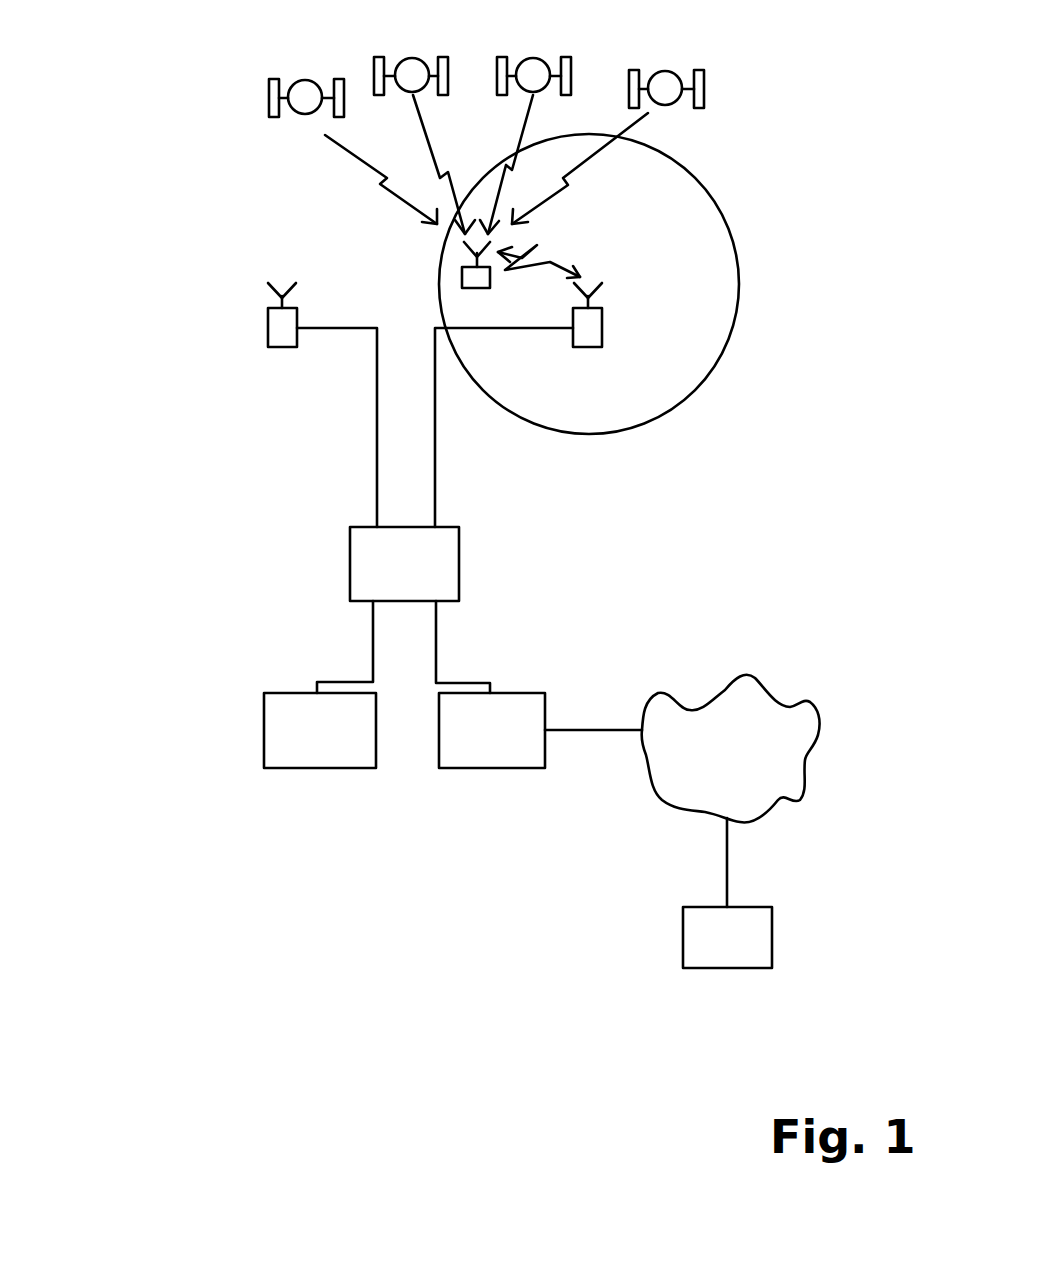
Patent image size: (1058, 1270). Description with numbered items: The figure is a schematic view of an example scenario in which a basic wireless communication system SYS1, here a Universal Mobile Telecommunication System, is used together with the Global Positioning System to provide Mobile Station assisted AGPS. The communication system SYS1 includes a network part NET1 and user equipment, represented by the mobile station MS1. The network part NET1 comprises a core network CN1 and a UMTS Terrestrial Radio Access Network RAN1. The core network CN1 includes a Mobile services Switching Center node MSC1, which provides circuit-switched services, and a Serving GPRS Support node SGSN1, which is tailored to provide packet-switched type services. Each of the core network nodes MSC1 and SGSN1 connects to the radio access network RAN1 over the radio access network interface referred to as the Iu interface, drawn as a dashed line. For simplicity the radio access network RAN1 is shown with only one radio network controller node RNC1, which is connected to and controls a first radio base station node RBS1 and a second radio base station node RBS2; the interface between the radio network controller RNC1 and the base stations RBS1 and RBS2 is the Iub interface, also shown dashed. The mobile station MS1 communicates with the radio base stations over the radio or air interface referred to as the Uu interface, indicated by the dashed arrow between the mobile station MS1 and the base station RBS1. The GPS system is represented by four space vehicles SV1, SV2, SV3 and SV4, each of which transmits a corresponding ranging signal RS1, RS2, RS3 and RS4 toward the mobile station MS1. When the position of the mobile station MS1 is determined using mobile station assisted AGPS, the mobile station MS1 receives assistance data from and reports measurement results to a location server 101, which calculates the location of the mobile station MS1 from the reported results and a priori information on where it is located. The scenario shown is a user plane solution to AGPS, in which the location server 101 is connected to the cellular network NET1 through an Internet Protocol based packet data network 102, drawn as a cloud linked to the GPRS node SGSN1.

The space vehicle SV1 is at (305, 80).
The space vehicle SV2 is at (412, 58).
The space vehicle SV3 is at (533, 58).
The space vehicle SV4 is at (665, 71).
The ranging signal RS1 is at (370, 176).
The ranging signal RS2 is at (440, 142).
The ranging signal RS3 is at (522, 137).
The ranging signal RS4 is at (635, 125).
The Uu interface Uu is at (547, 232).
The mobile station MS1 is at (465, 288).
The first radio base station node RBS1 is at (602, 340).
The second radio base station node RBS2 is at (297, 340).
The Iub interface Iub is at (457, 497).
The Iu interface Iu is at (457, 645).
The radio network controller node RNC1 is at (350, 567).
The Mobile services Switching Center node MSC1 is at (362, 768).
The Serving GPRS Support node SGSN1 is at (531, 768).
The packet data network 102 is at (795, 800).
The location server 101 is at (722, 968).
The wireless communication system SYS1 is at (213, 180).
The network part NET1 is at (120, 273).
The UMTS Terrestrial Radio Access Network RAN1 is at (193, 360).
The core network CN1 is at (212, 710).